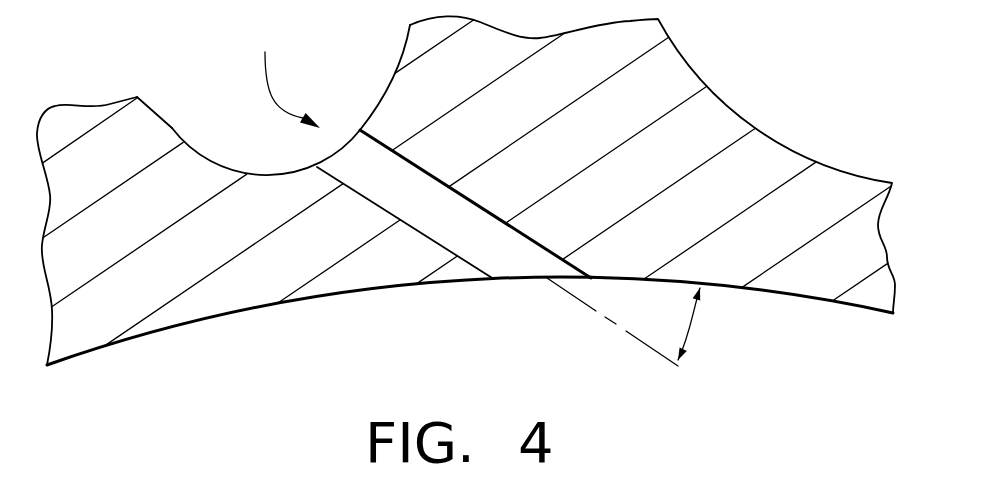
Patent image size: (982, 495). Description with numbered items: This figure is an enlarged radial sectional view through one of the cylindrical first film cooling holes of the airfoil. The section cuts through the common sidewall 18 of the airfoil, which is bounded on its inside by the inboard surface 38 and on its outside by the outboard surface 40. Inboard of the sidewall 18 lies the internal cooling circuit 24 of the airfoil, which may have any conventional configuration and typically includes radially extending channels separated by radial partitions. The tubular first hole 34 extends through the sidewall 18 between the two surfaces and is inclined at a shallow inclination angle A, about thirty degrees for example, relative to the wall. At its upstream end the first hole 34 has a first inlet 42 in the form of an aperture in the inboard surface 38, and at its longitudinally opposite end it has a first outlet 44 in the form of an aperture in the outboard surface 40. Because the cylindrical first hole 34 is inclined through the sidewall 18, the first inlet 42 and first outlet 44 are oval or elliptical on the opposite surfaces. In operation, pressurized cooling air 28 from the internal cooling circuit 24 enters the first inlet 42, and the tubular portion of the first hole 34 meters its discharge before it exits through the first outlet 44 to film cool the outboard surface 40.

The sidewall 18 is at (184, 282).
The internal cooling circuit 24 is at (287, 164).
The pressurized cooling air 28 is at (267, 80).
The first hole 34 is at (433, 244).
The inboard surface 38 is at (173, 127).
The outboard surface 40 is at (237, 313).
The first inlet 42 is at (346, 140).
The first outlet 44 is at (515, 279).
The inclination angle A is at (695, 327).